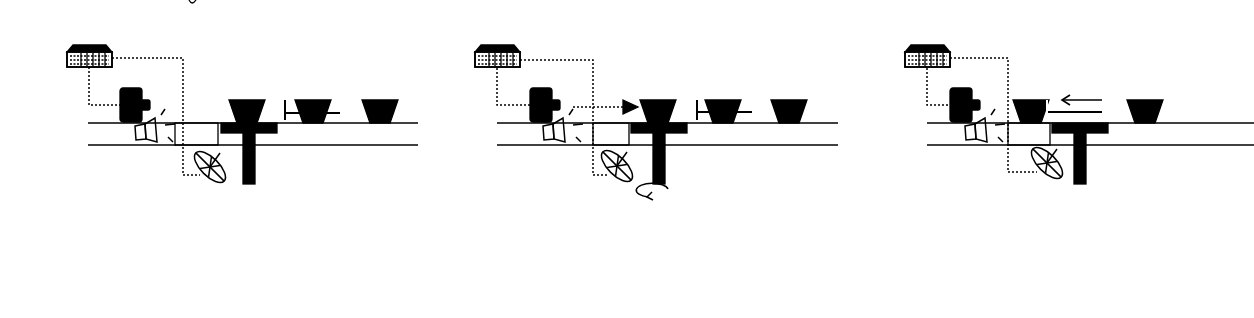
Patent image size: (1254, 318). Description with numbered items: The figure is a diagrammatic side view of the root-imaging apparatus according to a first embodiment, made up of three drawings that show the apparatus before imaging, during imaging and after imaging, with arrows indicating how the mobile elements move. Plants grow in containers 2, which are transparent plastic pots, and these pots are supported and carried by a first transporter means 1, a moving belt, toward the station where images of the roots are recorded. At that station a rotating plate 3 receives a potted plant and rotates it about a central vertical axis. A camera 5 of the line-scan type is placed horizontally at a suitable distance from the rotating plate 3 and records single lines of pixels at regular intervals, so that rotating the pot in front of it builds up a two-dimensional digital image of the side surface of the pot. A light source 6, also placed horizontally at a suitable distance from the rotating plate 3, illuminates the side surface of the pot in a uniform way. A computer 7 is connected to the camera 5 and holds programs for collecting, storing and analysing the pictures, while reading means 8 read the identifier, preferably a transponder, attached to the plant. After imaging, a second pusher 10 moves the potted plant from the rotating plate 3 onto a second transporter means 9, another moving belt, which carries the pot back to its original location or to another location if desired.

The first transporter means 1 is at (387, 147).
The containers 2 is at (388, 103).
The rotating plate 3 is at (256, 167).
The camera 5 is at (138, 88).
The light source 6 is at (143, 140).
The computer 7 is at (91, 43).
The reading means 8 is at (207, 183).
The second transporter means 9 is at (97, 146).
The second pusher 10 is at (333, 110).